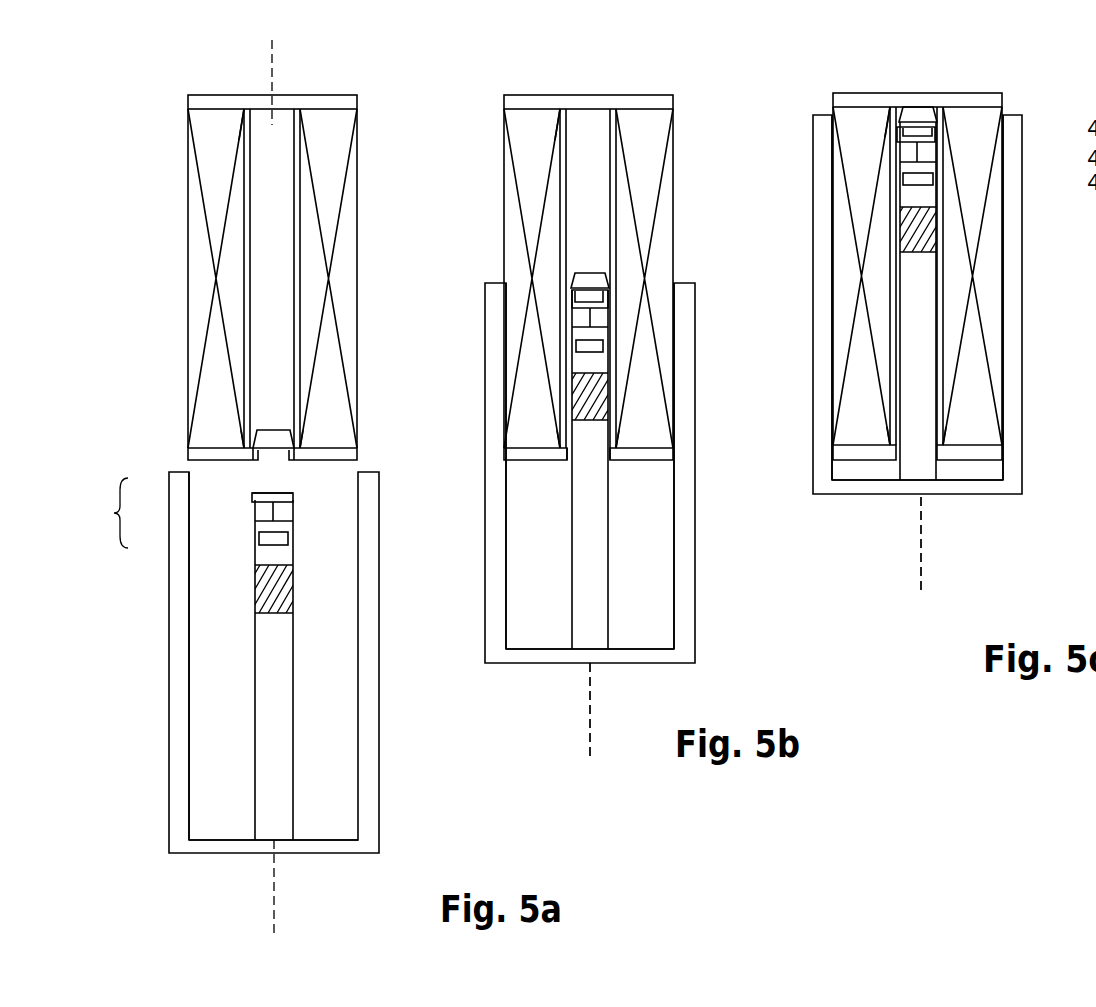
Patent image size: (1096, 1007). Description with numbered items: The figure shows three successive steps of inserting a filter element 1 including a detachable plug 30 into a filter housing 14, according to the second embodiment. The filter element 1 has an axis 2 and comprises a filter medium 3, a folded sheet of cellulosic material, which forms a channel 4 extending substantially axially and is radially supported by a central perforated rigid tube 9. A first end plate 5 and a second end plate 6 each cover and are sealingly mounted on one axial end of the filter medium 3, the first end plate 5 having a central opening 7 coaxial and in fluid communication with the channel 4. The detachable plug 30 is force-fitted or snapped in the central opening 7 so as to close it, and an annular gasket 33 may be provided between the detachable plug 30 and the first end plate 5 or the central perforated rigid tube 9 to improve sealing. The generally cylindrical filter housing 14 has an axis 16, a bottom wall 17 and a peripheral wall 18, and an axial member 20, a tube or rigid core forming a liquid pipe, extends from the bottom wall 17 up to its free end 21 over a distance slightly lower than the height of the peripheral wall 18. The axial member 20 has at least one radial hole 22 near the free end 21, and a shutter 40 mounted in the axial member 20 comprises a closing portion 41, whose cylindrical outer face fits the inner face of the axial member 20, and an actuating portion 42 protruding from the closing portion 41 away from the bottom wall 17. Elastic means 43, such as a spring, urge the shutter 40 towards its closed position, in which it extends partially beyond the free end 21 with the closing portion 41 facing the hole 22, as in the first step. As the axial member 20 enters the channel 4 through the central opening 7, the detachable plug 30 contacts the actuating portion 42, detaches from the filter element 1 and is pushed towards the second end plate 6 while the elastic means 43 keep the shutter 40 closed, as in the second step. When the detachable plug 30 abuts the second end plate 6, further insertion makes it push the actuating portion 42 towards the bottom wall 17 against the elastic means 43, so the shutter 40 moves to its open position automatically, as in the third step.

In FIG. 5A, the filter element 1 is at (150, 158).
In FIG. 5B, the filter element 1 is at (468, 158).
In FIG. 5C, the filter element 1 is at (957, 470).
In FIG. 5A, the axis 2 is at (272, 62).
In FIG. 5B, the axis 2 is at (590, 733).
In FIG. 5C, the axis 2 is at (921, 580).
In FIG. 5A, the filter medium 3 is at (218, 170).
In FIG. 5B, the filter medium 3 is at (530, 385).
In FIG. 5C, the filter medium 3 is at (867, 357).
In FIG. 5A, the channel 4 is at (270, 213).
In FIG. 5B, the channel 4 is at (590, 213).
In FIG. 5C, the channel 4 is at (943, 292).
In FIG. 5A, the first end plate 5 is at (205, 457).
In FIG. 5B, the first end plate 5 is at (638, 460).
In FIG. 5C, the first end plate 5 is at (855, 457).
In FIG. 5A, the second end plate 6 is at (230, 101).
In FIG. 5B, the second end plate 6 is at (548, 101).
In FIG. 5C, the second end plate 6 is at (867, 100).
In FIG. 5B, the central opening 7 is at (565, 463).
In FIG. 5A, the central perforated rigid tube 9 is at (245, 140).
In FIG. 5B, the central perforated rigid tube 9 is at (563, 140).
In FIG. 5C, the central perforated rigid tube 9 is at (889, 137).
In FIG. 5A, the filter housing 14 is at (154, 632).
In FIG. 5B, the filter housing 14 is at (707, 590).
In FIG. 5C, the filter housing 14 is at (1038, 129).
In FIG. 5A, the axis 16 is at (272, 888).
In FIG. 5A, the bottom wall 17 is at (330, 847).
In FIG. 5B, the bottom wall 17 is at (648, 655).
In FIG. 5C, the bottom wall 17 is at (870, 497).
In FIG. 5A, the peripheral wall 18 is at (183, 712).
In FIG. 5B, the peripheral wall 18 is at (500, 560).
In FIG. 5C, the peripheral wall 18 is at (828, 150).
In FIG. 5A, the axial member 20 is at (268, 768).
In FIG. 5B, the axial member 20 is at (582, 615).
In FIG. 5C, the axial member 20 is at (918, 370).
In FIG. 5A, the free end 21 is at (295, 502).
In FIG. 5A, the radial hole 22 is at (285, 540).
In FIG. 5B, the radial hole 22 is at (600, 345).
In FIG. 5C, the radial hole 22 is at (935, 180).
In FIG. 5A, the detachable plug 30 is at (275, 430).
In FIG. 5B, the detachable plug 30 is at (590, 268).
In FIG. 5C, the detachable plug 30 is at (920, 112).
In FIG. 5A, the annular gasket 33 is at (247, 440).
In FIG. 5B, the annular gasket 33 is at (614, 448).
In FIG. 5C, the annular gasket 33 is at (950, 446).
In FIG. 5B, the shutter 40 is at (446, 285).
In FIG. 5C, the shutter 40 is at (905, 200).
In FIG. 5A, the closing portion 41 is at (265, 555).
In FIG. 5B, the closing portion 41 is at (590, 360).
In FIG. 5C, the closing portion 41 is at (918, 184).
In FIG. 5A, the actuating portion 42 is at (258, 493).
In FIG. 5B, the actuating portion 42 is at (585, 298).
In FIG. 5C, the actuating portion 42 is at (916, 134).
In FIG. 5A, the elastic means 43 is at (285, 595).
In FIG. 5B, the elastic means 43 is at (600, 398).
In FIG. 5C, the elastic means 43 is at (925, 232).